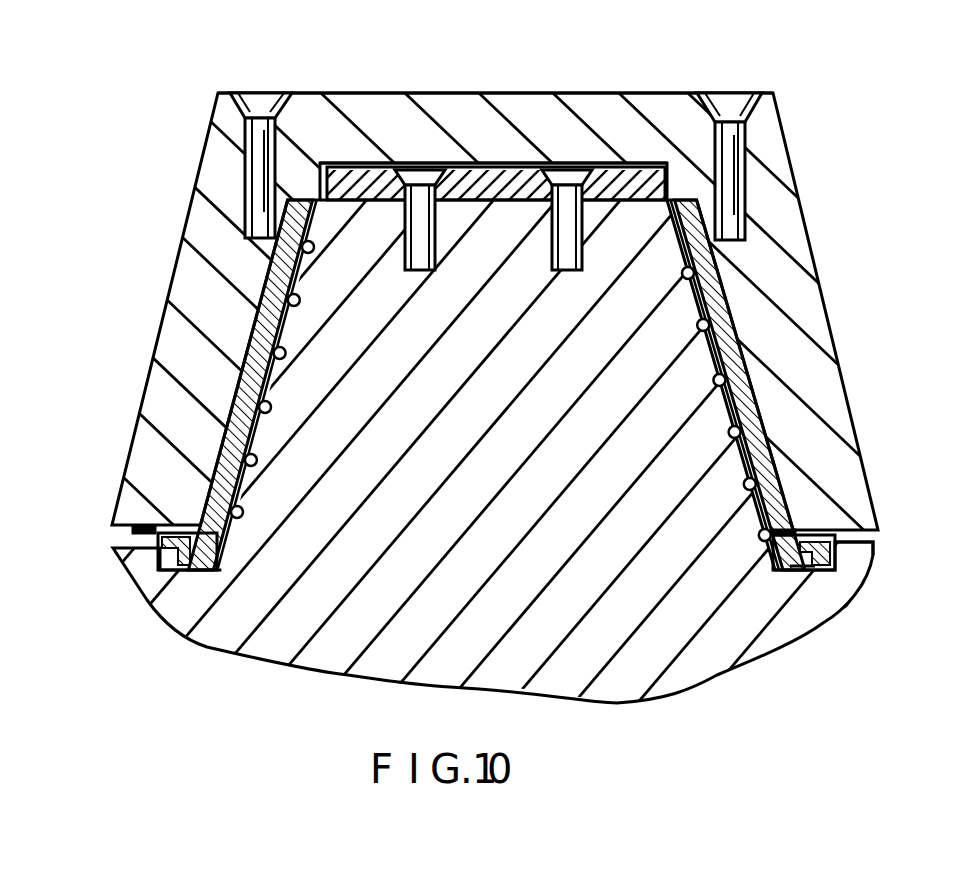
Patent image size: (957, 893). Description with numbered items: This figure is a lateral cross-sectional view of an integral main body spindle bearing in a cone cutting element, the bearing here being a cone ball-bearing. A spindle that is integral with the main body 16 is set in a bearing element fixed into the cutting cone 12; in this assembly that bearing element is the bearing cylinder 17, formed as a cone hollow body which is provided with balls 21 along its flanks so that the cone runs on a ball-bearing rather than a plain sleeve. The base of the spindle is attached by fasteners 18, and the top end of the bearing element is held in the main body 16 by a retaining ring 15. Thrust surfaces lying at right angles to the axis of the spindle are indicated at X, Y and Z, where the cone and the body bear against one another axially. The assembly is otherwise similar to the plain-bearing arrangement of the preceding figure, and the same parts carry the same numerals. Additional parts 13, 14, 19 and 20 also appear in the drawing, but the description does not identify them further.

The cutting cone 12 is at (192, 407).
The top wall of block 13 is at (441, 128).
The screw 14 is at (590, 170).
The retaining ring 15 is at (873, 543).
The main body 16 is at (609, 632).
The bearing cylinder 17 is at (758, 460).
The fasteners 18 is at (257, 185).
The retainer plate 19 is at (528, 165).
The screw shank 20 is at (417, 247).
The balls 21 is at (708, 328).
The thrust surface X is at (160, 532).
The thrust surface Y is at (799, 574).
The thrust surface Z is at (190, 556).